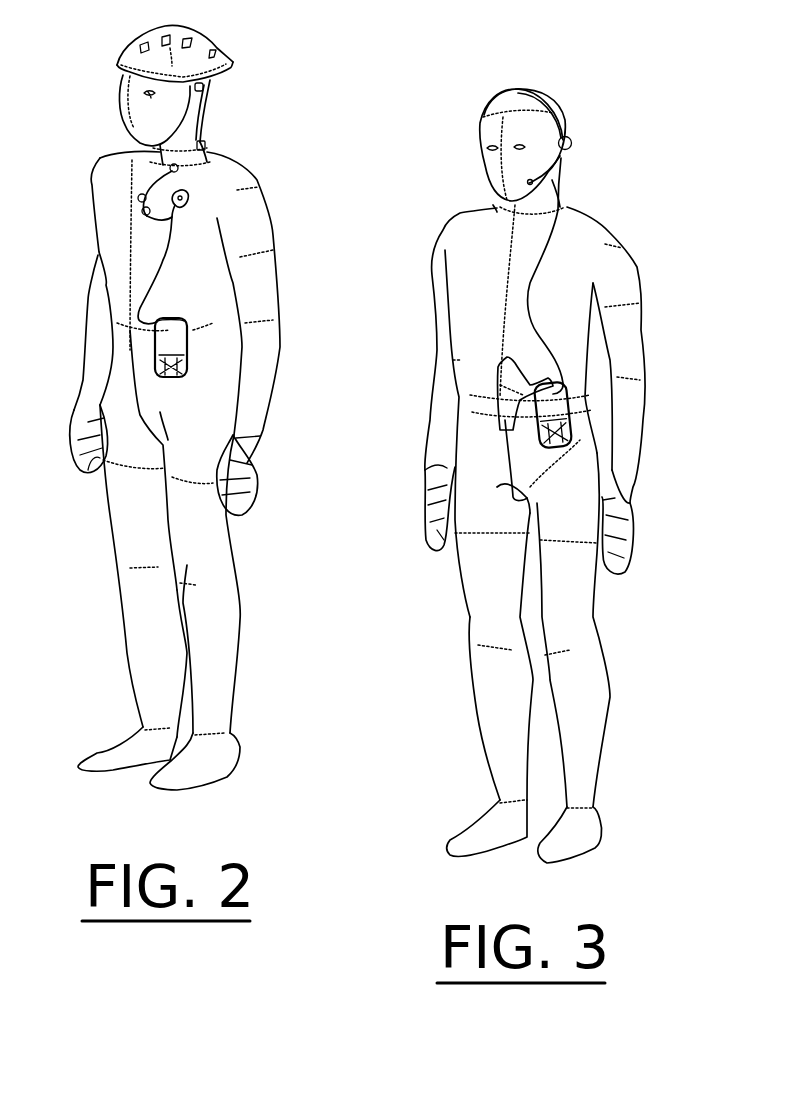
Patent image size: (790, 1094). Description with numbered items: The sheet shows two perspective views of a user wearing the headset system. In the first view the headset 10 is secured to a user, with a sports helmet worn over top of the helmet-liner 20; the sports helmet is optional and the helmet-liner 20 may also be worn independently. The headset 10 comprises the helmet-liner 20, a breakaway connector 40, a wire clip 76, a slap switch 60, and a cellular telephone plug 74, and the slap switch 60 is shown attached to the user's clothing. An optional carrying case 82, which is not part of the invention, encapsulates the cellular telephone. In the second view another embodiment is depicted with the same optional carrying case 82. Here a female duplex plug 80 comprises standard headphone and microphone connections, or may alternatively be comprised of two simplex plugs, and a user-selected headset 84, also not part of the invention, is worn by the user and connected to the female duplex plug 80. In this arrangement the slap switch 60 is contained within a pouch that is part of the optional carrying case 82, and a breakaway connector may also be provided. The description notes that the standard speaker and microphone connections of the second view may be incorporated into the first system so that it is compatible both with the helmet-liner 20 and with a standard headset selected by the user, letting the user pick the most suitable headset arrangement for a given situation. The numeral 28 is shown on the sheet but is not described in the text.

In FIG. 2, the headset 10 is at (344, 78).
In FIG. 2, the helmet-liner 20 is at (210, 95).
In FIG. 2, the strap attachment 28 is at (204, 87).
In FIG. 2, the breakaway connector 40 is at (206, 145).
In FIG. 2, the slap switch 60 is at (188, 196).
In FIG. 2, the cellular telephone plug 74 is at (160, 320).
In FIG. 2, the wire clip 76 is at (170, 167).
In FIG. 3, the female duplex plug 80 is at (508, 405).
In FIG. 2, the carrying case 82 is at (184, 357).
In FIG. 3, the carrying case 82 is at (560, 420).
In FIG. 3, the user-selected headset 84 is at (583, 140).